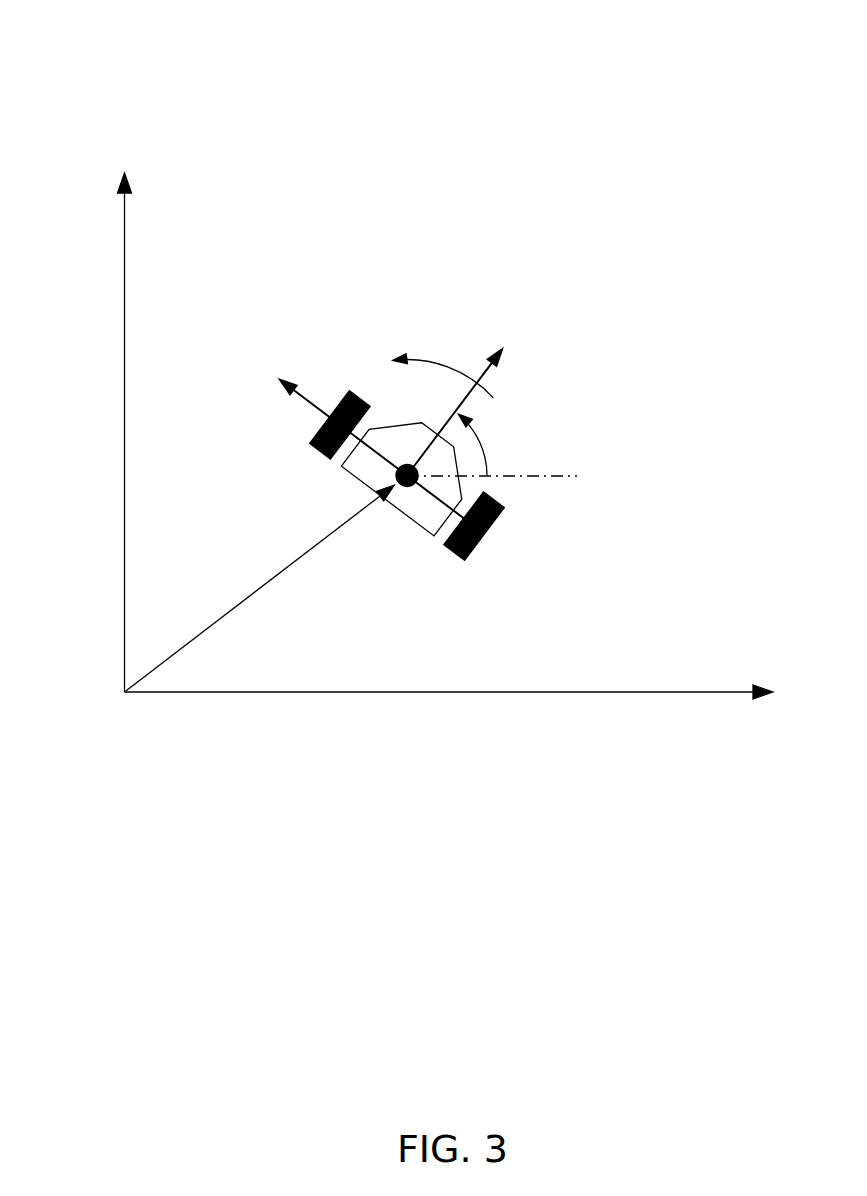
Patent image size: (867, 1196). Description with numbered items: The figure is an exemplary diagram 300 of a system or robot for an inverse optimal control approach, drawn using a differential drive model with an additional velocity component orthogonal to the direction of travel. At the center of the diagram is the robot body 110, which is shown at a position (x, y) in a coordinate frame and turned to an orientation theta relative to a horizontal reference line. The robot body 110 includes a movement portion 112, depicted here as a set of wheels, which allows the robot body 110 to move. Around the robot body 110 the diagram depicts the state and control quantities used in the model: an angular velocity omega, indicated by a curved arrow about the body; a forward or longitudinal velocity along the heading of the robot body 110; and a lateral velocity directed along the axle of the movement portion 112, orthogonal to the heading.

The exemplary diagram of a system or robot for inverse optimal control approach 300 is at (127, 57).
The robot body 110 is at (405, 462).
The movement portion 112 is at (483, 540).